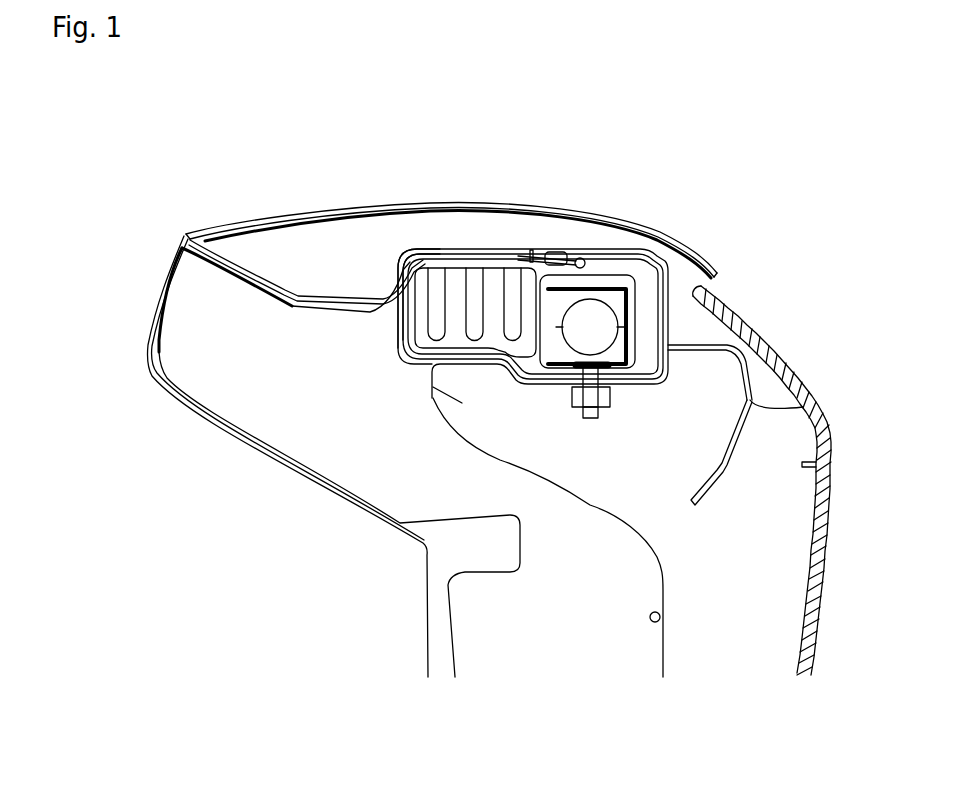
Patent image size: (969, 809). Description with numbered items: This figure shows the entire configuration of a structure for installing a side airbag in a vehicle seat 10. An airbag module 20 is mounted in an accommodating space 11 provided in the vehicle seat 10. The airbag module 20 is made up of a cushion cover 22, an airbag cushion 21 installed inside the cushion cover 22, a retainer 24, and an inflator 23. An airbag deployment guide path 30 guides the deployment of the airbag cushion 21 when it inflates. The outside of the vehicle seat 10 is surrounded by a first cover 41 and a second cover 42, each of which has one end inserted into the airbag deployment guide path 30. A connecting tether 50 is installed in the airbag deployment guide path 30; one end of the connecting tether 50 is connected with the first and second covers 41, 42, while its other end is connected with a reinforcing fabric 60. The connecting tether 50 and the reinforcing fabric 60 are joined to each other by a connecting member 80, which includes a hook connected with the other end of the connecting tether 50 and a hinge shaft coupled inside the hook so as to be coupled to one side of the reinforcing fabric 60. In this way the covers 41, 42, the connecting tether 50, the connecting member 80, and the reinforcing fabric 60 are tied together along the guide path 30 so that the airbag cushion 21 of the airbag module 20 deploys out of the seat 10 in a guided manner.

The vehicle seat 10 is at (681, 186).
The accommodating space 11 is at (437, 253).
The airbag module 20 is at (428, 361).
The airbag cushion 21 is at (477, 283).
The cushion cover 22 is at (398, 310).
The inflator 23 is at (633, 328).
The retainer 24 is at (636, 350).
The airbag deployment guide path 30 is at (300, 293).
The first cover 41 is at (153, 280).
The second cover 42 is at (286, 212).
The connecting tether 50 is at (340, 302).
The reinforcing fabric 60 is at (660, 278).
The connecting member 80 is at (577, 240).